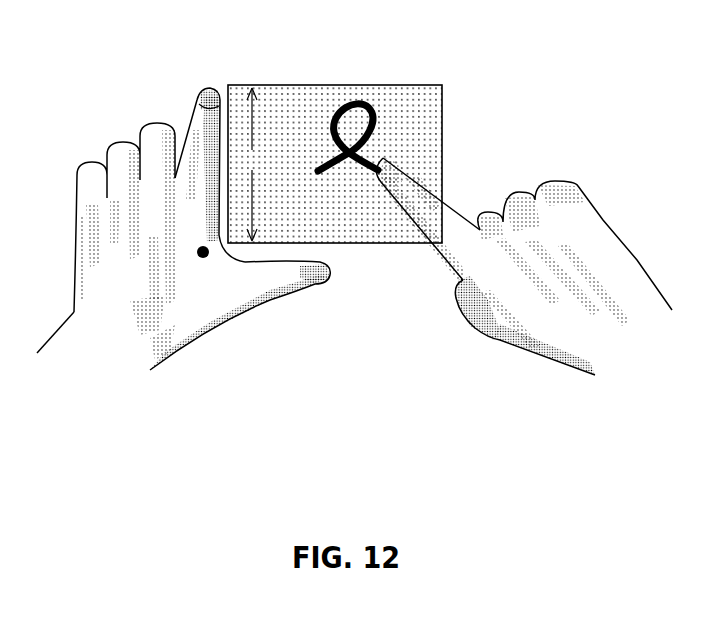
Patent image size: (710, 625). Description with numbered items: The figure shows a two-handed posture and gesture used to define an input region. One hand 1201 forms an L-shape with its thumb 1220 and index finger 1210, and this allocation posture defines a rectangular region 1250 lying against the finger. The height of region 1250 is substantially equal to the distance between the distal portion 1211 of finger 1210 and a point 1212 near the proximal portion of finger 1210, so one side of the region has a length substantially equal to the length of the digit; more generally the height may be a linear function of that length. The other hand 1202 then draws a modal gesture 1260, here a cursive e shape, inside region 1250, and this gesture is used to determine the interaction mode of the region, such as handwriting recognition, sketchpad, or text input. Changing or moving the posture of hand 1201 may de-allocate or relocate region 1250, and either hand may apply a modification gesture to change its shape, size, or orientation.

The hand 1201 is at (183, 225).
The hand 1202 is at (592, 376).
The index finger 1210 is at (199, 104).
The distal portion 1211 is at (208, 88).
The point near the proximal portion 1212 is at (197, 256).
The thumb 1220 is at (283, 270).
The region 1250 is at (418, 88).
The modal gesture 1260 is at (350, 98).